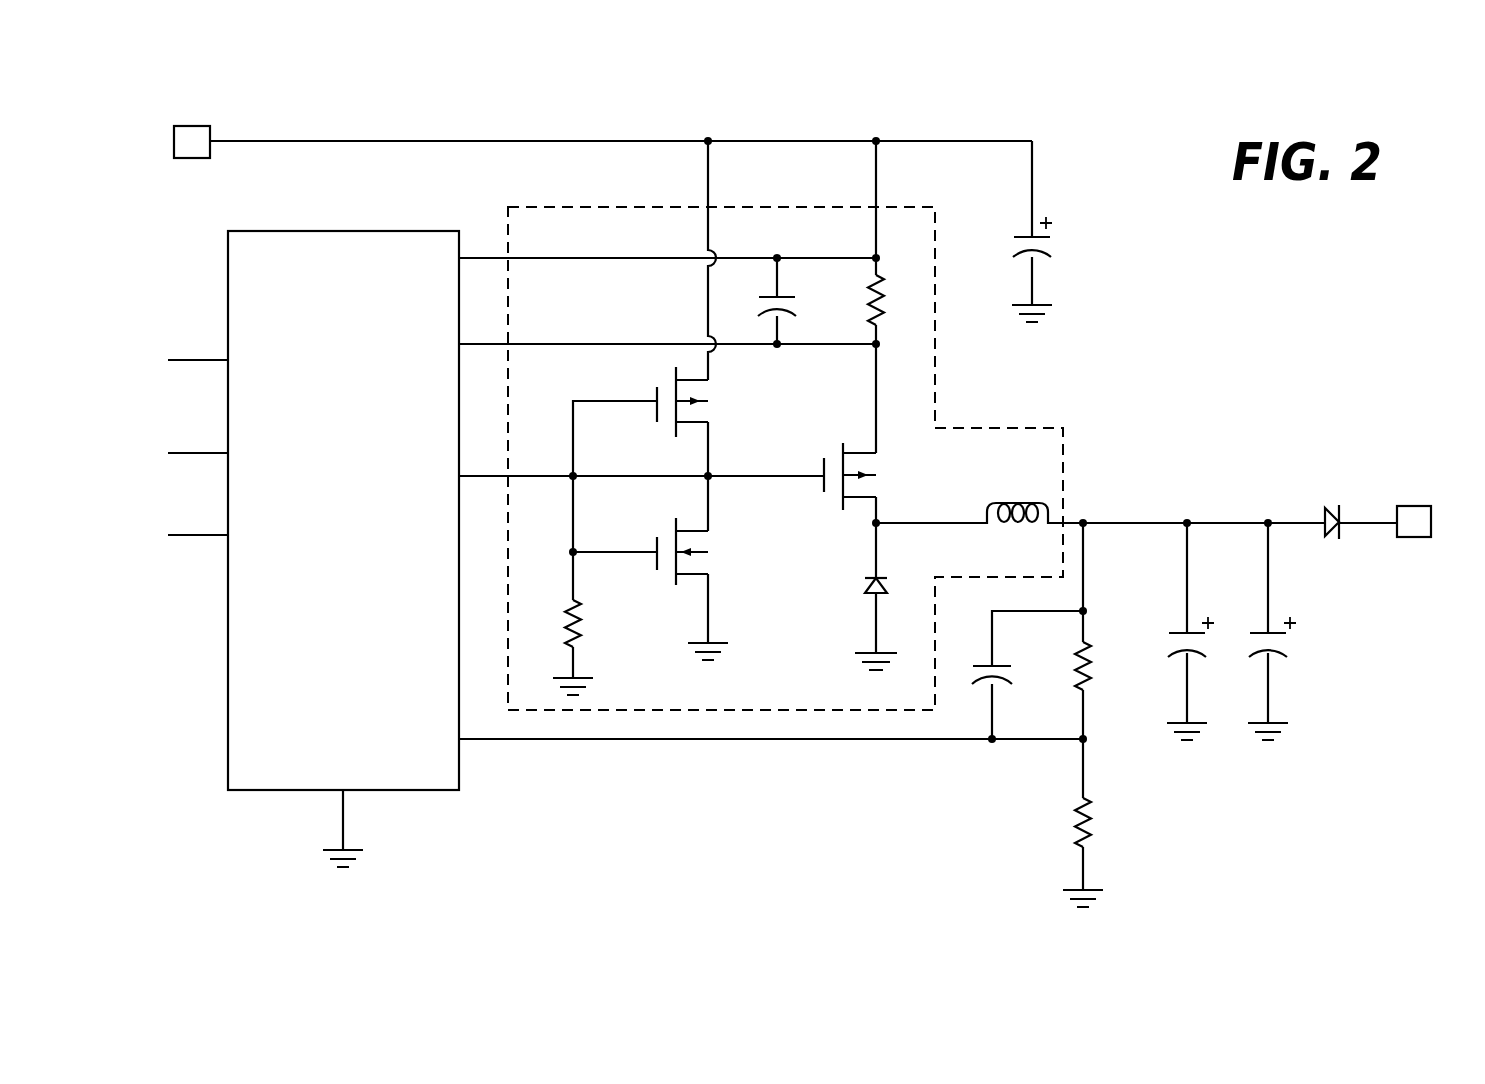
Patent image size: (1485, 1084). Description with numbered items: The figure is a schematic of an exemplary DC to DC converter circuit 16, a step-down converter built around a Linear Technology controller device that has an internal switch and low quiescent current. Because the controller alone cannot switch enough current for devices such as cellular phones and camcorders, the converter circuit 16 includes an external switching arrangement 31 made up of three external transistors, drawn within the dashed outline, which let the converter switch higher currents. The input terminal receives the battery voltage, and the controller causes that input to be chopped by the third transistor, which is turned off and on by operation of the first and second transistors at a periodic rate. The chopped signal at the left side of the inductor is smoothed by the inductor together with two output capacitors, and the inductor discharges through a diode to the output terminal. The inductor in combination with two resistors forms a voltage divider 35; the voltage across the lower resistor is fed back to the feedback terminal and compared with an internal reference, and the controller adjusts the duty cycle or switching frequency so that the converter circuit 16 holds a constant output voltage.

The DC to DC converter circuit 16 is at (452, 96).
The external switching arrangement 31 is at (938, 373).
The voltage divider 35 is at (1040, 778).